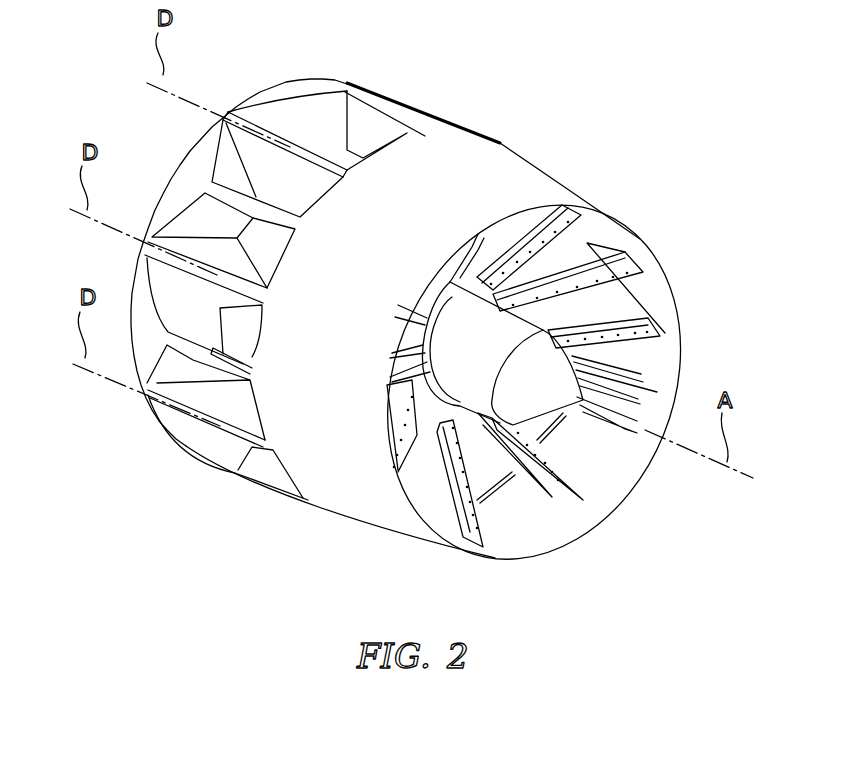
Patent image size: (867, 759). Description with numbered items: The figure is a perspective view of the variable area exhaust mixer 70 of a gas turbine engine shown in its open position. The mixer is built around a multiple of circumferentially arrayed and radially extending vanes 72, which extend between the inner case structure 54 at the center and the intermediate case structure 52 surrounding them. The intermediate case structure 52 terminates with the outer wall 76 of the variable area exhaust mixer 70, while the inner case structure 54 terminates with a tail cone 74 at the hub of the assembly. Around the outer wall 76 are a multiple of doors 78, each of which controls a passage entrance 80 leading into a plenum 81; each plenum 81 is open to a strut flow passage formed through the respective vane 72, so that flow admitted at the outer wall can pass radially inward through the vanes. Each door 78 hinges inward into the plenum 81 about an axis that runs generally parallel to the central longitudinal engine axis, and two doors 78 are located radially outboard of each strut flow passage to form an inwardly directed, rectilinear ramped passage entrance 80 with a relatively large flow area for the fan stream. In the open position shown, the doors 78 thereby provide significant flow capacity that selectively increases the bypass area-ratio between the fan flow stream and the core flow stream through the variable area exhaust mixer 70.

The variable area exhaust mixer 70 is at (670, 97).
The intermediate case structure 52 is at (577, 183).
The outer wall 76 is at (513, 168).
The doors 78 is at (375, 100).
The passage entrance 80 is at (327, 122).
The plenum 81 is at (203, 218).
The vanes 72 is at (587, 243).
The inner case structure 54 is at (493, 303).
The tail cone 74 is at (543, 382).